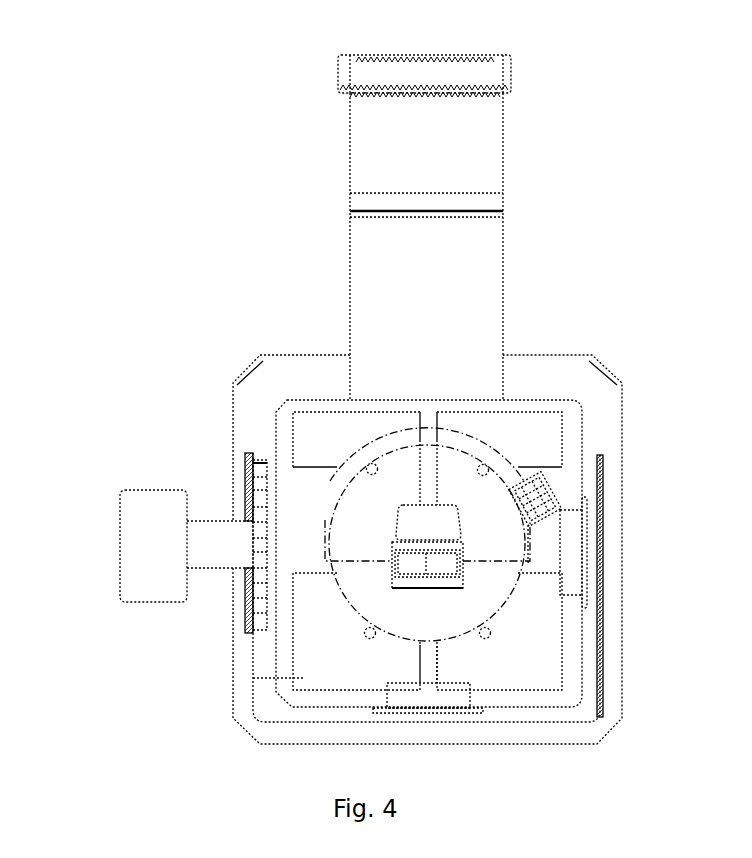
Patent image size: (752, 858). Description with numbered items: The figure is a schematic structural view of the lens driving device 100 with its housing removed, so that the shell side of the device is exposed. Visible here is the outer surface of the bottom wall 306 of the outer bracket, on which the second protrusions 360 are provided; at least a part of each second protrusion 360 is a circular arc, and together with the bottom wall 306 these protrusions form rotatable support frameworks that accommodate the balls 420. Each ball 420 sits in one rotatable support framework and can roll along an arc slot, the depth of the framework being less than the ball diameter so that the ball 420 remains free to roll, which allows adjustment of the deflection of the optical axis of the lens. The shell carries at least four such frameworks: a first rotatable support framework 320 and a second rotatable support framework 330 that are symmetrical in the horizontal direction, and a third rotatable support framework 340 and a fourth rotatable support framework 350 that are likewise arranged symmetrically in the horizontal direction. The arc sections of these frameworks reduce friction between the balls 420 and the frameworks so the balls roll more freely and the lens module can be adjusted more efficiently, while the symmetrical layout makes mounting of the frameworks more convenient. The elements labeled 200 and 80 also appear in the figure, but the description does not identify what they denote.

The lens driving device 100 is at (151, 53).
The support column 200 is at (358, 288).
The drive motor 80 is at (135, 532).
The bottom wall 306 is at (303, 679).
The first rotatable support framework 320 is at (345, 497).
The ball 420 is at (378, 471).
The second protrusion 360 is at (493, 494).
The third rotatable support framework 340 is at (510, 478).
The second rotatable support framework 330 is at (313, 663).
The fourth rotatable support framework 350 is at (545, 645).